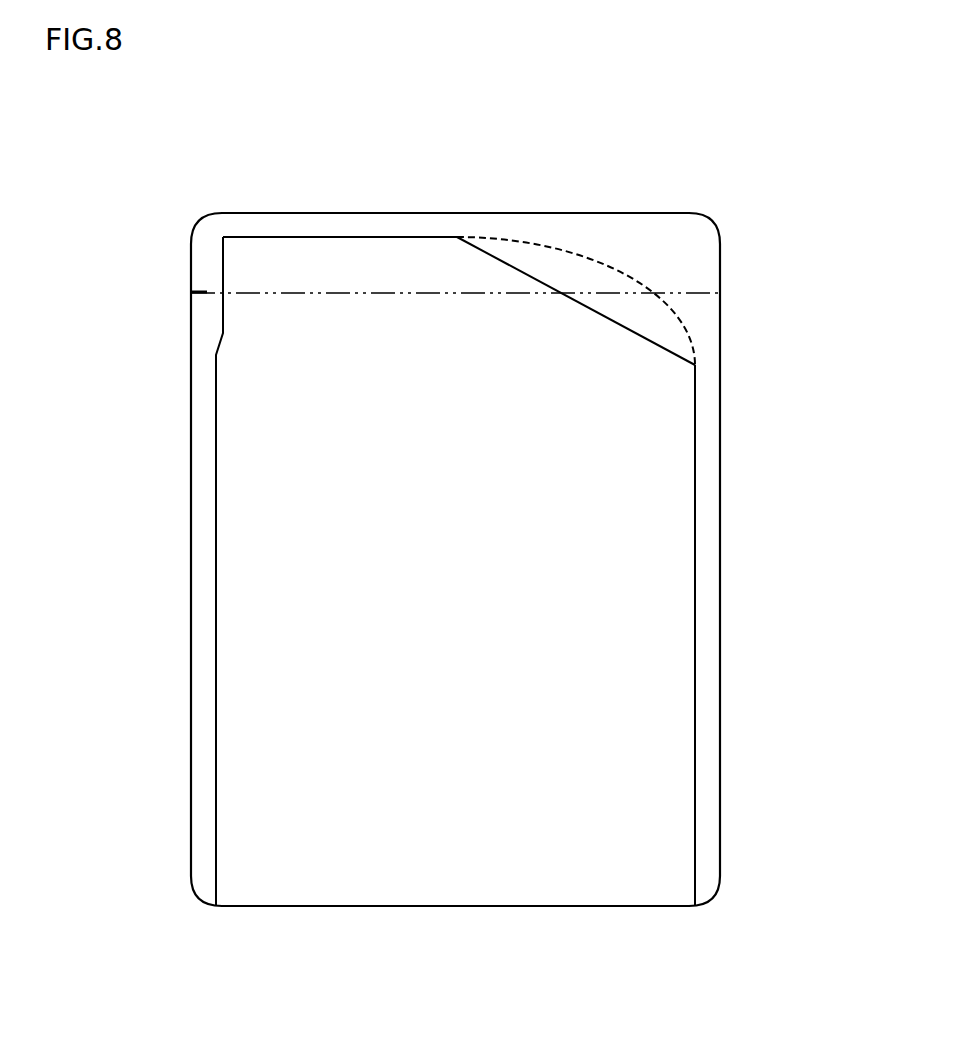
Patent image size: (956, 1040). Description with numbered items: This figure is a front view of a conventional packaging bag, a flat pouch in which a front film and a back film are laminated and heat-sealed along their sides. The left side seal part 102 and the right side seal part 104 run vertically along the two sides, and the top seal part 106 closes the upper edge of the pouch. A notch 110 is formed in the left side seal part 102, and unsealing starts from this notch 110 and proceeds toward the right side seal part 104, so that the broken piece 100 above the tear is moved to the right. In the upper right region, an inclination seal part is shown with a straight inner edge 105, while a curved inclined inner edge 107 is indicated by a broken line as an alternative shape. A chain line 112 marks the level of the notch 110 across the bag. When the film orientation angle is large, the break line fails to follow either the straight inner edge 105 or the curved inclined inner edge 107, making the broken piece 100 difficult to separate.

The broken piece 100 is at (457, 906).
The side seal part 102 is at (204, 597).
The side seal part 104 is at (712, 598).
The straight inner edge 105 is at (500, 258).
The top seal part 106 is at (278, 224).
The curved inclined inner edge 107 is at (599, 258).
The notch 110 is at (189, 292).
The virtual line 112 is at (362, 293).